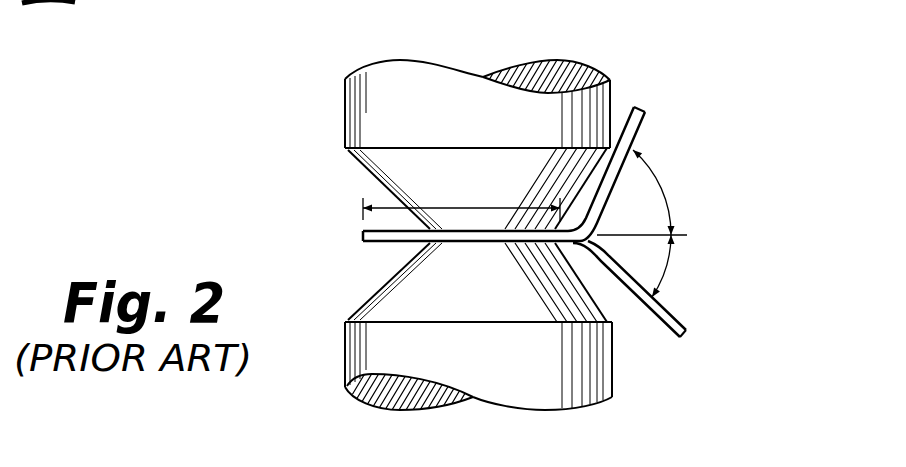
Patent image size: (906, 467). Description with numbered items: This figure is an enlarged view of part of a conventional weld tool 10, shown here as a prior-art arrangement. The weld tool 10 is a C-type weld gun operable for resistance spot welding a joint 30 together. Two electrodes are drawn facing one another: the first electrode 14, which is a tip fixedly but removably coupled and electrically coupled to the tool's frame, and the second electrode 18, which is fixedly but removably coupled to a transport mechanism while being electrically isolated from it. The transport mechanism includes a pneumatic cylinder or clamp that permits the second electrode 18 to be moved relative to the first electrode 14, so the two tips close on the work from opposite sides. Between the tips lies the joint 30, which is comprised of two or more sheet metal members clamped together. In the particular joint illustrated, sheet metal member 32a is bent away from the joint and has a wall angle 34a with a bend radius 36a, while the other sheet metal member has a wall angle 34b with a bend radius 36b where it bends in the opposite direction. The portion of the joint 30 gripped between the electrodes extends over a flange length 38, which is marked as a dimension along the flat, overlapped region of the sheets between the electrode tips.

The weld tool 10 is at (330, 113).
The first electrode 14 is at (550, 398).
The second electrode 18 is at (571, 68).
The joint 30 is at (334, 236).
The sheet metal member 32a is at (644, 116).
The wall angle 34a is at (650, 166).
The wall angle 34b is at (663, 285).
The bend radius 36a is at (567, 207).
The bend radius 36b is at (580, 258).
The flange length 38 is at (378, 206).